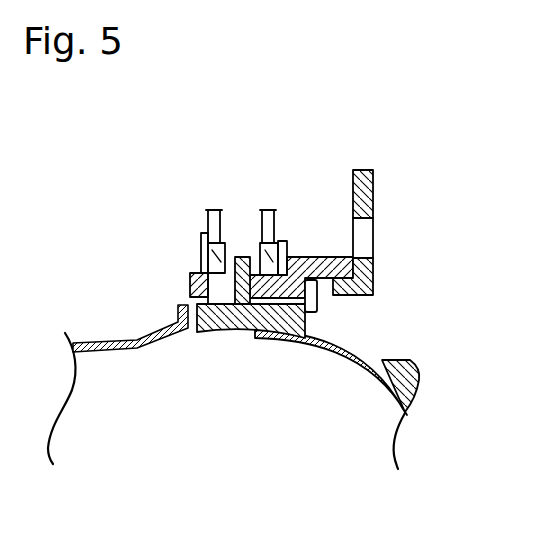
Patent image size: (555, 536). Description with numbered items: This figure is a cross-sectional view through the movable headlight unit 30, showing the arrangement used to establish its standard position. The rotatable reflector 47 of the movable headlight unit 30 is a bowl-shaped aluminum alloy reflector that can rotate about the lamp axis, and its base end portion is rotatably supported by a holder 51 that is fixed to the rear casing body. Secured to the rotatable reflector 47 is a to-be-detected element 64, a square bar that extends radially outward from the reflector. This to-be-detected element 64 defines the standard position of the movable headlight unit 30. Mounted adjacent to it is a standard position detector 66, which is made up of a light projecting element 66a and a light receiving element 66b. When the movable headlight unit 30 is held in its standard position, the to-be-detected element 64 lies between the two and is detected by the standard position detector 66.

The movable headlight unit 30 is at (161, 293).
The rotatable reflector 47 is at (348, 353).
The holder 51 is at (423, 362).
The to-be-detected element 64 is at (243, 257).
The standard position detector 66 is at (325, 115).
The light projecting element 66a is at (221, 255).
The light receiving element 66b is at (283, 250).